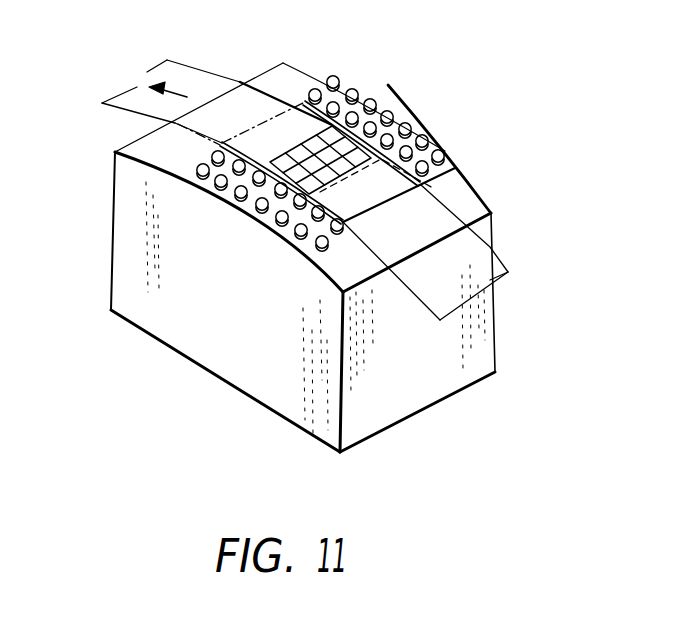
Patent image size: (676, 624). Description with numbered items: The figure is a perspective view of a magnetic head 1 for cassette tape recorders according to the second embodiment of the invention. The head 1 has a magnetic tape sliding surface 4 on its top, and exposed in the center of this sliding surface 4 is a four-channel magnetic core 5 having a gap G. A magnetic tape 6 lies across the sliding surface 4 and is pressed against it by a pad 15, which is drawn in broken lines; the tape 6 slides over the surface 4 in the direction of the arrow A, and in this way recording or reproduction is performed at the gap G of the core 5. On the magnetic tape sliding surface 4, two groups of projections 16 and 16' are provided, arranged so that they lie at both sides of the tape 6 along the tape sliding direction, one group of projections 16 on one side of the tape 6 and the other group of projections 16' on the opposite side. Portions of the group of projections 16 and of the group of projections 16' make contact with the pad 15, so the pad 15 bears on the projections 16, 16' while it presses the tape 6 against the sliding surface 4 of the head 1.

The magnetic head 1 is at (441, 408).
The magnetic tape sliding surface 4 is at (481, 198).
The 4-channel magnetic core 5 is at (290, 150).
The magnetic tape 6 is at (204, 74).
The pad 15 is at (433, 188).
The group of projections 16 is at (198, 212).
The group of projections 16' is at (394, 98).
The gap G is at (316, 158).
The arrow A is at (171, 84).